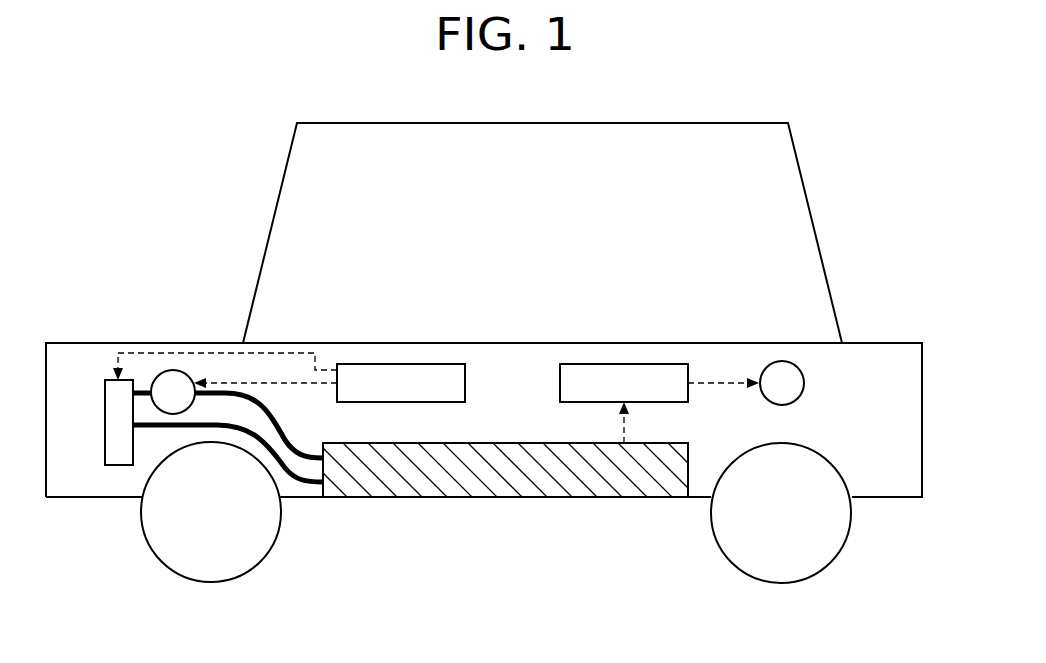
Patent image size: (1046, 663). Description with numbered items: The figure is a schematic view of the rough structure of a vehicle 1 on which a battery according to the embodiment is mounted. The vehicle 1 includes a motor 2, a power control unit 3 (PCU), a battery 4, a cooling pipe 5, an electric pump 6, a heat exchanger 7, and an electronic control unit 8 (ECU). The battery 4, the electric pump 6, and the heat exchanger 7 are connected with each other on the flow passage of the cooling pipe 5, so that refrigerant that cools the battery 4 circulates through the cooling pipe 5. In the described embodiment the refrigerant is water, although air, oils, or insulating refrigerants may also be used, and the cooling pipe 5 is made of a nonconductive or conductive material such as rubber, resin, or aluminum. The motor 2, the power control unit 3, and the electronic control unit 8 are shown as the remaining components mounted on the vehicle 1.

The vehicle 1 is at (846, 128).
The motor 2 is at (804, 382).
The power control unit 3 is at (622, 364).
The battery 4 is at (508, 497).
The cooling pipe 5 is at (284, 452).
The electric pump 6 is at (171, 370).
The heat exchanger 7 is at (113, 379).
The electronic control unit 8 is at (400, 364).